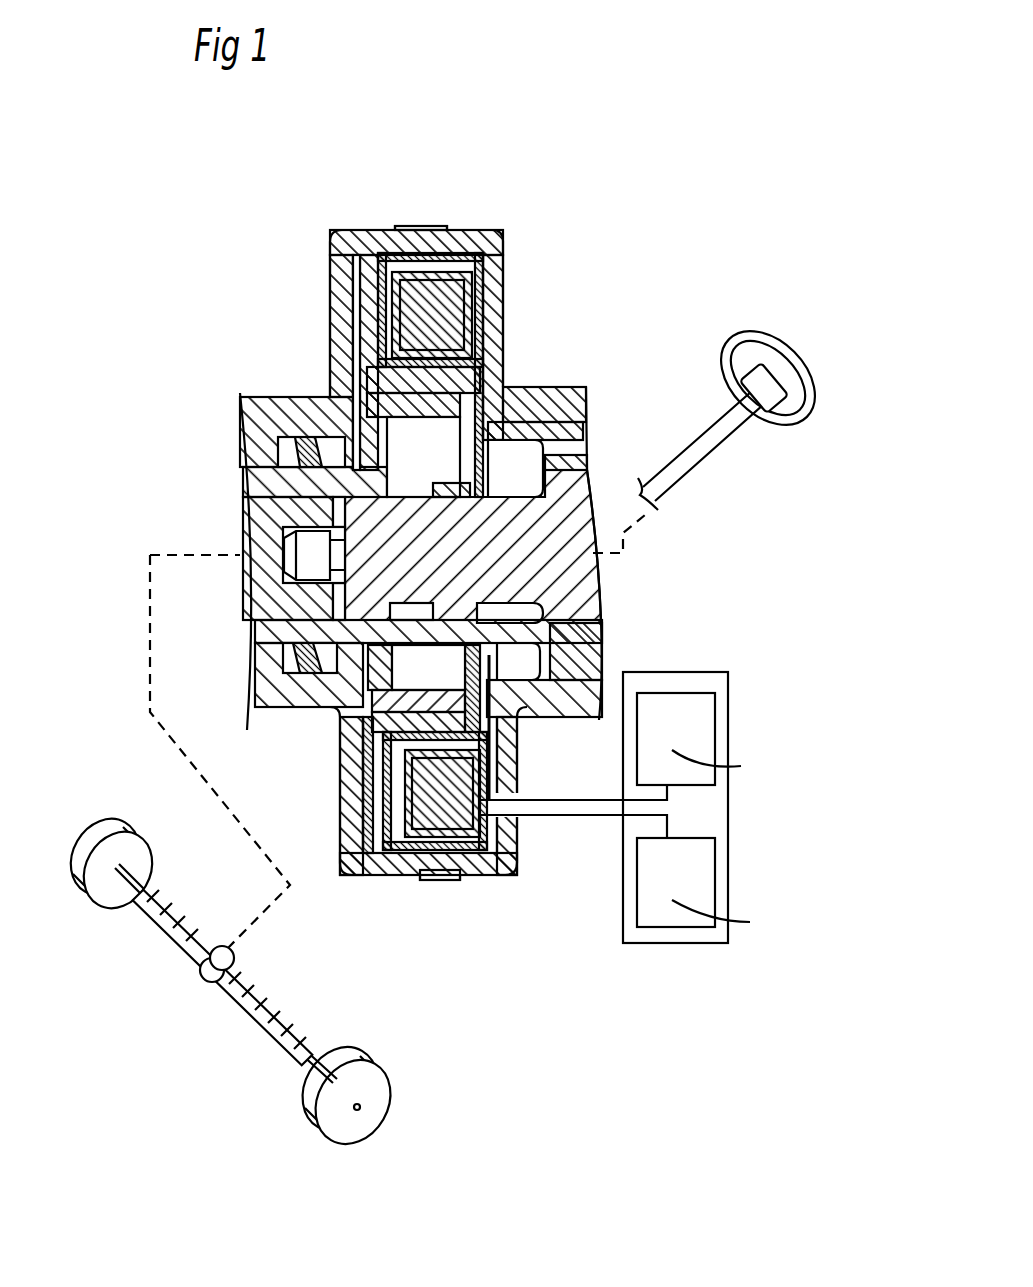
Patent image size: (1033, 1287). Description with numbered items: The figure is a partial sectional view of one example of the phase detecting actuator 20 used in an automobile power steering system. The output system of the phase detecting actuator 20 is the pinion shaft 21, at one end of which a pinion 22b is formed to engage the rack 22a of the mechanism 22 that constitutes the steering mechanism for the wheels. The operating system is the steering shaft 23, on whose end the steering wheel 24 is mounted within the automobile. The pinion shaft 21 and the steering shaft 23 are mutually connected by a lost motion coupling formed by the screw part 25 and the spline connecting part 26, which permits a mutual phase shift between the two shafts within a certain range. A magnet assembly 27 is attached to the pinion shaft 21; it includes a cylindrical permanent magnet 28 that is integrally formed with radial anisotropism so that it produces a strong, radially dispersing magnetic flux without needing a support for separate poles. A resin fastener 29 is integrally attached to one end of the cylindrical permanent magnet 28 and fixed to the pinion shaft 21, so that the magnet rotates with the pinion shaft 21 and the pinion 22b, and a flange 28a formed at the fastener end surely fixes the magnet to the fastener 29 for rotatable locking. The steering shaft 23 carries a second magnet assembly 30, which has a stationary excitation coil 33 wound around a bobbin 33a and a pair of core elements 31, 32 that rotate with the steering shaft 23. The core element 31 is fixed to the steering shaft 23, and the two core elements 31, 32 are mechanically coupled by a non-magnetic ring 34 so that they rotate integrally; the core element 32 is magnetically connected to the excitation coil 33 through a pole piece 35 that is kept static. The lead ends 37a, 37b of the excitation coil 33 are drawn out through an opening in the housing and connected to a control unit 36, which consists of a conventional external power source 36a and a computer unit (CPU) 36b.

The phase detecting actuator 20 is at (484, 221).
The pinion shaft 21 is at (246, 497).
The mechanism 22 is at (298, 1019).
The rack 22a is at (250, 1010).
The pinion 22b is at (230, 960).
The steering shaft 23 is at (598, 603).
The steering wheel 24 is at (777, 420).
The screw part 25 is at (317, 622).
The spline connecting part 26 is at (305, 545).
The magnet assembly 27 is at (357, 412).
The cylindrical permanent magnet 28 is at (472, 380).
The flange 28a is at (302, 760).
The resin fastener 29 is at (429, 573).
The magnet assembly 30 is at (342, 277).
The core element 31 is at (478, 350).
The core element 32 is at (398, 228).
The excitation coil 33 is at (455, 305).
The bobbin 33a is at (470, 326).
The non-magnetic ring 34 is at (358, 380).
The pole piece 35 is at (504, 242).
The control unit 36 is at (730, 682).
The external power source 36a is at (703, 743).
The computer unit (CPU) 36b is at (698, 885).
The lead end 37a is at (547, 800).
The lead end 37b is at (520, 835).